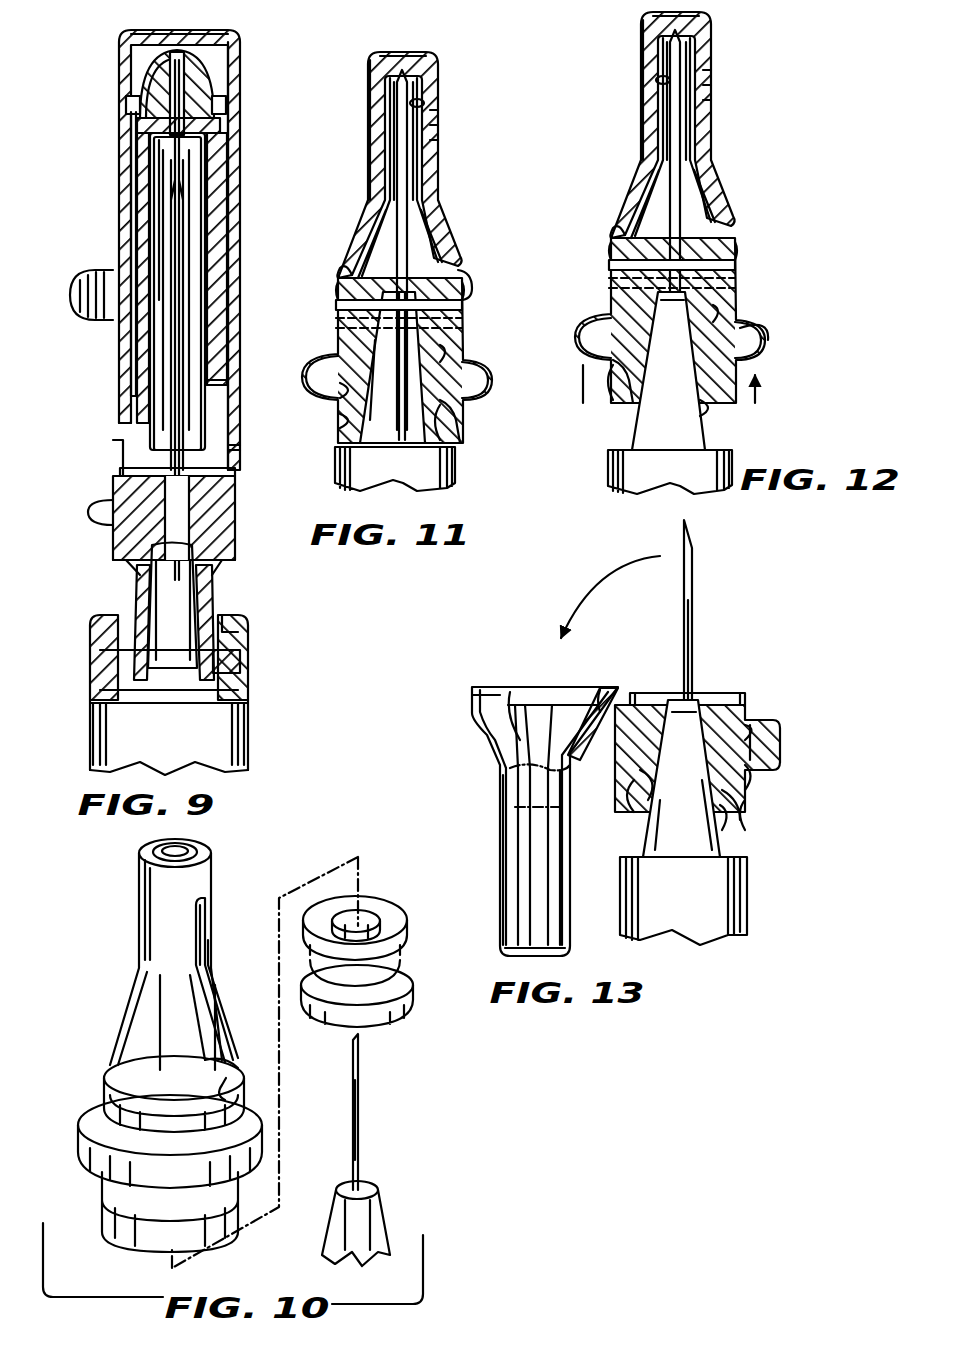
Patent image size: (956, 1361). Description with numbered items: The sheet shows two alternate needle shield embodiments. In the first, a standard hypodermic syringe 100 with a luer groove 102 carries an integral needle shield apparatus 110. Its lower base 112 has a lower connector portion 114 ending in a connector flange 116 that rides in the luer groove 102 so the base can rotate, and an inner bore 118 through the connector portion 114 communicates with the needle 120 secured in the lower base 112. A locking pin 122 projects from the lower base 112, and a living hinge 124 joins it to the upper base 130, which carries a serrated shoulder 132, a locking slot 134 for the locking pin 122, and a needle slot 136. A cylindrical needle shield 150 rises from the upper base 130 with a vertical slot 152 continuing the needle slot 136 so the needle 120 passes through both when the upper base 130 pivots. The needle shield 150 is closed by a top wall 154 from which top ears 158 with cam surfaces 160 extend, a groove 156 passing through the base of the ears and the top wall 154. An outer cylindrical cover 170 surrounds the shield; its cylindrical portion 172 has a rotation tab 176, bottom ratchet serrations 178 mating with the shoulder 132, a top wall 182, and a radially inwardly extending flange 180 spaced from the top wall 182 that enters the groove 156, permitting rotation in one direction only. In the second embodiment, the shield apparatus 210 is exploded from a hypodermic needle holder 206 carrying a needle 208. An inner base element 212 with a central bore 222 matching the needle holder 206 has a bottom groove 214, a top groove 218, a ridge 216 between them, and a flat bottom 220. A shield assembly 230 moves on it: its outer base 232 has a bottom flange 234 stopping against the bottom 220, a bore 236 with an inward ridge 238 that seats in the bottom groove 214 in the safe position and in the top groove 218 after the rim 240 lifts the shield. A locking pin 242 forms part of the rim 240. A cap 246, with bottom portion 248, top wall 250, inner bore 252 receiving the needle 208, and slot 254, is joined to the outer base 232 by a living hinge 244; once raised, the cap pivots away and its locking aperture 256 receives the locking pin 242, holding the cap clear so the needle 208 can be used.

In FIG. 9, the hypodermic syringe 100 is at (250, 728).
In FIG. 9, the luer groove 102 is at (226, 628).
In FIG. 9, the integral needle shield apparatus 110 is at (243, 34).
In FIG. 9, the lower base 112 is at (240, 548).
In FIG. 9, the lower connector portion 114 is at (206, 600).
In FIG. 9, the connector flange 116 is at (218, 668).
In FIG. 9, the inner bore 118 is at (152, 585).
In FIG. 9, the needle 120 is at (182, 290).
In FIG. 9, the locking pin 122 is at (95, 522).
In FIG. 9, the hinge 124 is at (120, 472).
In FIG. 9, the upper base 130 is at (120, 423).
In FIG. 9, the serrated shoulder 132 is at (232, 390).
In FIG. 9, the locking slot 134 is at (122, 442).
In FIG. 9, the needle slot 136 is at (232, 452).
In FIG. 9, the needle shield 150 is at (148, 208).
In FIG. 9, the vertical slot 152 is at (216, 243).
In FIG. 9, the top wall 154 is at (160, 122).
In FIG. 9, the groove 156 is at (216, 110).
In FIG. 9, the top ears 158 is at (210, 82).
In FIG. 9, the cam surfaces 160 is at (138, 62).
In FIG. 9, the outer cylindrical cover 170 is at (243, 151).
In FIG. 9, the cylindrical portion 172 is at (238, 208).
In FIG. 9, the rotation tab 176 is at (96, 270).
In FIG. 9, the ratchet serrations 178 is at (120, 405).
In FIG. 9, the radially inwardly extending flange 180 is at (130, 108).
In FIG. 9, the top wall 182 is at (152, 30).
In FIG. 11, the hypodermic needle holder 206 is at (448, 418).
In FIG. 12, the hypodermic needle holder 206 is at (712, 432).
In FIG. 13, the hypodermic needle holder 206 is at (728, 842).
In FIG. 10, the hypodermic needle holder 206 is at (382, 1218).
In FIG. 11, the needle 208 is at (405, 180).
In FIG. 12, the needle 208 is at (682, 218).
In FIG. 13, the needle 208 is at (693, 652).
In FIG. 10, the needle 208 is at (360, 1132).
In FIG. 11, the shield apparatus 210 is at (452, 127).
In FIG. 12, the shield apparatus 210 is at (729, 108).
In FIG. 13, the shield apparatus 210 is at (724, 603).
In FIG. 10, the shield apparatus 210 is at (265, 1051).
In FIG. 11, the inner base element 212 is at (452, 290).
In FIG. 13, the inner base element 212 is at (745, 812).
In FIG. 10, the inner base element 212 is at (410, 908).
In FIG. 11, the bottom groove 214 is at (456, 378).
In FIG. 12, the bottom groove 214 is at (616, 388).
In FIG. 13, the bottom groove 214 is at (756, 790).
In FIG. 10, the bottom groove 214 is at (405, 994).
In FIG. 11, the ridge 216 is at (442, 356).
In FIG. 12, the ridge 216 is at (762, 370).
In FIG. 13, the ridge 216 is at (762, 780).
In FIG. 10, the ridge 216 is at (408, 966).
In FIG. 11, the top groove 218 is at (458, 326).
In FIG. 12, the top groove 218 is at (748, 320).
In FIG. 13, the top groove 218 is at (748, 732).
In FIG. 10, the top groove 218 is at (406, 938).
In FIG. 11, the bottom 220 is at (373, 398).
In FIG. 13, the bottom 220 is at (652, 828).
In FIG. 10, the bottom 220 is at (356, 898).
In FIG. 11, the central bore 222 is at (392, 356).
In FIG. 12, the central bore 222 is at (712, 420).
In FIG. 13, the central bore 222 is at (660, 812).
In FIG. 11, the shield assembly 230 is at (442, 76).
In FIG. 12, the shield assembly 230 is at (714, 72).
In FIG. 13, the shield assembly 230 is at (498, 822).
In FIG. 10, the shield assembly 230 is at (160, 842).
In FIG. 11, the outer base 232 is at (336, 302).
In FIG. 12, the outer base 232 is at (606, 302).
In FIG. 13, the outer base 232 is at (752, 710).
In FIG. 10, the outer base 232 is at (150, 1235).
In FIG. 11, the bottom flange 234 is at (452, 442).
In FIG. 12, the bottom flange 234 is at (626, 412).
In FIG. 11, the bore 236 is at (332, 424).
In FIG. 12, the bore 236 is at (742, 412).
In FIG. 13, the bore 236 is at (722, 694).
In FIG. 11, the ridge 238 is at (332, 392).
In FIG. 12, the ridge 238 is at (768, 332).
In FIG. 13, the ridge 238 is at (662, 770).
In FIG. 11, the rim 240 is at (310, 368).
In FIG. 12, the rim 240 is at (772, 346).
In FIG. 13, the rim 240 is at (778, 750).
In FIG. 10, the rim 240 is at (92, 1185).
In FIG. 11, the locking pin 242 is at (472, 402).
In FIG. 12, the locking pin 242 is at (588, 340).
In FIG. 13, the locking pin 242 is at (622, 790).
In FIG. 11, the living hinge 244 is at (334, 326).
In FIG. 12, the living hinge 244 is at (610, 283).
In FIG. 13, the living hinge 244 is at (620, 692).
In FIG. 11, the cap 246 is at (378, 164).
In FIG. 12, the cap 246 is at (640, 62).
In FIG. 13, the cap 246 is at (500, 852).
In FIG. 10, the cap 246 is at (155, 926).
In FIG. 11, the bottom portion 248 is at (370, 290).
In FIG. 12, the bottom portion 248 is at (606, 256).
In FIG. 13, the bottom portion 248 is at (600, 690).
In FIG. 10, the bottom portion 248 is at (215, 1055).
In FIG. 11, the top wall 250 is at (405, 52).
In FIG. 12, the top wall 250 is at (650, 30).
In FIG. 10, the top wall 250 is at (220, 866).
In FIG. 11, the inner bore 252 is at (423, 104).
In FIG. 12, the inner bore 252 is at (664, 88).
In FIG. 13, the inner bore 252 is at (528, 692).
In FIG. 10, the inner bore 252 is at (195, 1024).
In FIG. 11, the slot 254 is at (436, 236).
In FIG. 12, the slot 254 is at (706, 172).
In FIG. 13, the slot 254 is at (500, 750).
In FIG. 10, the slot 254 is at (203, 930).
In FIG. 11, the locking aperture 256 is at (356, 266).
In FIG. 12, the locking aperture 256 is at (642, 226).
In FIG. 13, the locking aperture 256 is at (575, 750).